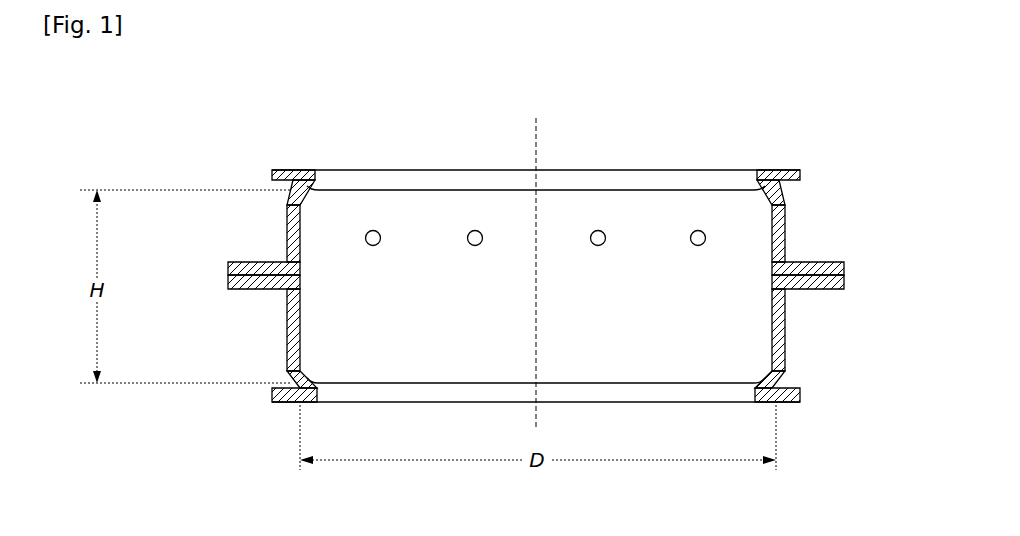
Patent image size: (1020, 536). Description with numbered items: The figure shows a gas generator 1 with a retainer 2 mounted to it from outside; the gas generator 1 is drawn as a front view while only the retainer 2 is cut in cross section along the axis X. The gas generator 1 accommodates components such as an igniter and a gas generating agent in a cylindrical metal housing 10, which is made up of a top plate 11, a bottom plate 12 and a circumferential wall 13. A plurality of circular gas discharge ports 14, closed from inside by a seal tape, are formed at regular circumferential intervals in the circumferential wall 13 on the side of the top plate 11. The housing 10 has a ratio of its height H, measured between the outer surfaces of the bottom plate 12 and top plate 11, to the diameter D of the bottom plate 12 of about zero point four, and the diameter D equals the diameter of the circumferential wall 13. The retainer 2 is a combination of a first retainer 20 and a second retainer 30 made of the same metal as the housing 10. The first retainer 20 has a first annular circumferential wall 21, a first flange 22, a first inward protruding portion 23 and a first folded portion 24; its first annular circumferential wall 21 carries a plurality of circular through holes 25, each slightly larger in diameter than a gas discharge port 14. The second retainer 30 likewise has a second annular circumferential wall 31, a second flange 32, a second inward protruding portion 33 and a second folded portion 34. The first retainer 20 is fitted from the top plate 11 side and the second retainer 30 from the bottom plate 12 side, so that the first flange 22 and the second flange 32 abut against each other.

The gas generator 1 is at (608, 163).
The retainer 2 is at (164, 237).
The housing 10 is at (609, 374).
The top plate 11 is at (418, 186).
The bottom plate 12 is at (407, 388).
The circumferential wall 13 is at (287, 337).
The gas discharge ports 14 is at (471, 247).
The first retainer 20 is at (277, 210).
The first annular circumferential wall 21 is at (788, 215).
The first flange 22 is at (815, 263).
The first inward protruding portion 23 is at (783, 193).
The first folded portion 24 is at (777, 169).
The through holes 25 is at (287, 242).
The second retainer 30 is at (277, 320).
The second annular circumferential wall 31 is at (787, 342).
The second flange 32 is at (818, 290).
The second inward protruding portion 33 is at (769, 375).
The second folded portion 34 is at (783, 404).